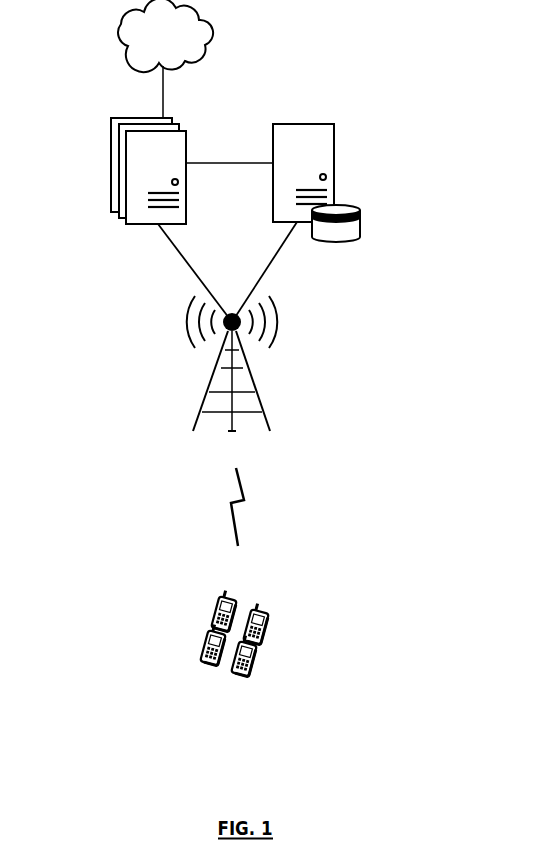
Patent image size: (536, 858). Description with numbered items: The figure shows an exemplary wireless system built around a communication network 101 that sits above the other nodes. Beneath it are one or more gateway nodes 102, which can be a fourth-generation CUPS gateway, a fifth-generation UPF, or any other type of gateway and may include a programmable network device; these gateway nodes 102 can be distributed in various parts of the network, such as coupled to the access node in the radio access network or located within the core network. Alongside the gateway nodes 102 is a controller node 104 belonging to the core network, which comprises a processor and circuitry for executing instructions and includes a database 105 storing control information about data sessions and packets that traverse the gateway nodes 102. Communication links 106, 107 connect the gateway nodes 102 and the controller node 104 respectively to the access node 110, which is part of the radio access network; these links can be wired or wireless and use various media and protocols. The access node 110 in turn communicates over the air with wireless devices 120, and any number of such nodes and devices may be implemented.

The communication network 101 is at (147, 44).
The gateway node(s) 102 is at (129, 118).
The controller node 104 is at (334, 124).
The database 105 is at (360, 204).
The communication link 106 is at (178, 253).
The communication link 107 is at (271, 261).
The access node 110 is at (211, 382).
The wireless devices 120 is at (273, 679).